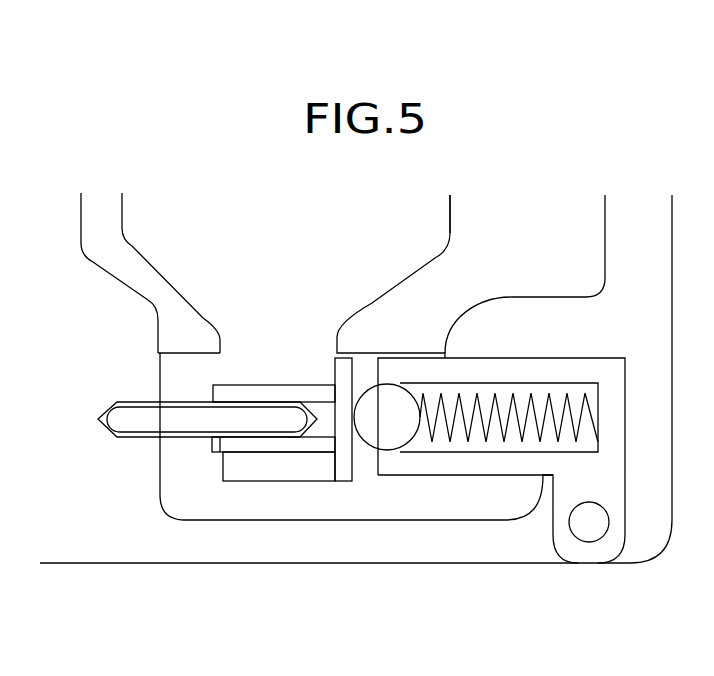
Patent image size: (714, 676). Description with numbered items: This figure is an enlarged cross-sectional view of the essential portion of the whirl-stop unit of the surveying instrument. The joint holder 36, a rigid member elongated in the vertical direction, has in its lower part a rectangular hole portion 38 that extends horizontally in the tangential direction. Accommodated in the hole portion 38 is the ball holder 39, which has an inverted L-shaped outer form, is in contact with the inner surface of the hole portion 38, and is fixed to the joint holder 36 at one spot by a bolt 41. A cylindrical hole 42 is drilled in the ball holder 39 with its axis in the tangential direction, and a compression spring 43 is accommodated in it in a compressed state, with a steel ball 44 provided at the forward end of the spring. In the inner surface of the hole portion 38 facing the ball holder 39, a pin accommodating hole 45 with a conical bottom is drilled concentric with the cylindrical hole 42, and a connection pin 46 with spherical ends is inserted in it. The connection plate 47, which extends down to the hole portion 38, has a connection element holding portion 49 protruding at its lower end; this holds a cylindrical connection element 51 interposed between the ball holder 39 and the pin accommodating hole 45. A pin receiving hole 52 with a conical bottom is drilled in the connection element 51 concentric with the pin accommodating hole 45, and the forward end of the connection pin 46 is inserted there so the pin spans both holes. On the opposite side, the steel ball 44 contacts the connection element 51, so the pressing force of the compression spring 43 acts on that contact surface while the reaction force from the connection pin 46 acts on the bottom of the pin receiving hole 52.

The joint holder 36 is at (213, 583).
The hole portion 38 is at (381, 504).
The ball holder 39 is at (528, 358).
The bolt 41 is at (573, 538).
The cylindrical hole 42 is at (480, 450).
The compression spring 43 is at (573, 400).
The steel ball 44 is at (360, 385).
The pin accommodating hole 45 is at (132, 402).
The connection pin 46 is at (178, 402).
The connection plate 47 is at (452, 232).
The connection element holding portion 49 is at (293, 481).
The connection element 51 is at (255, 385).
The pin receiving hole 52 is at (250, 437).